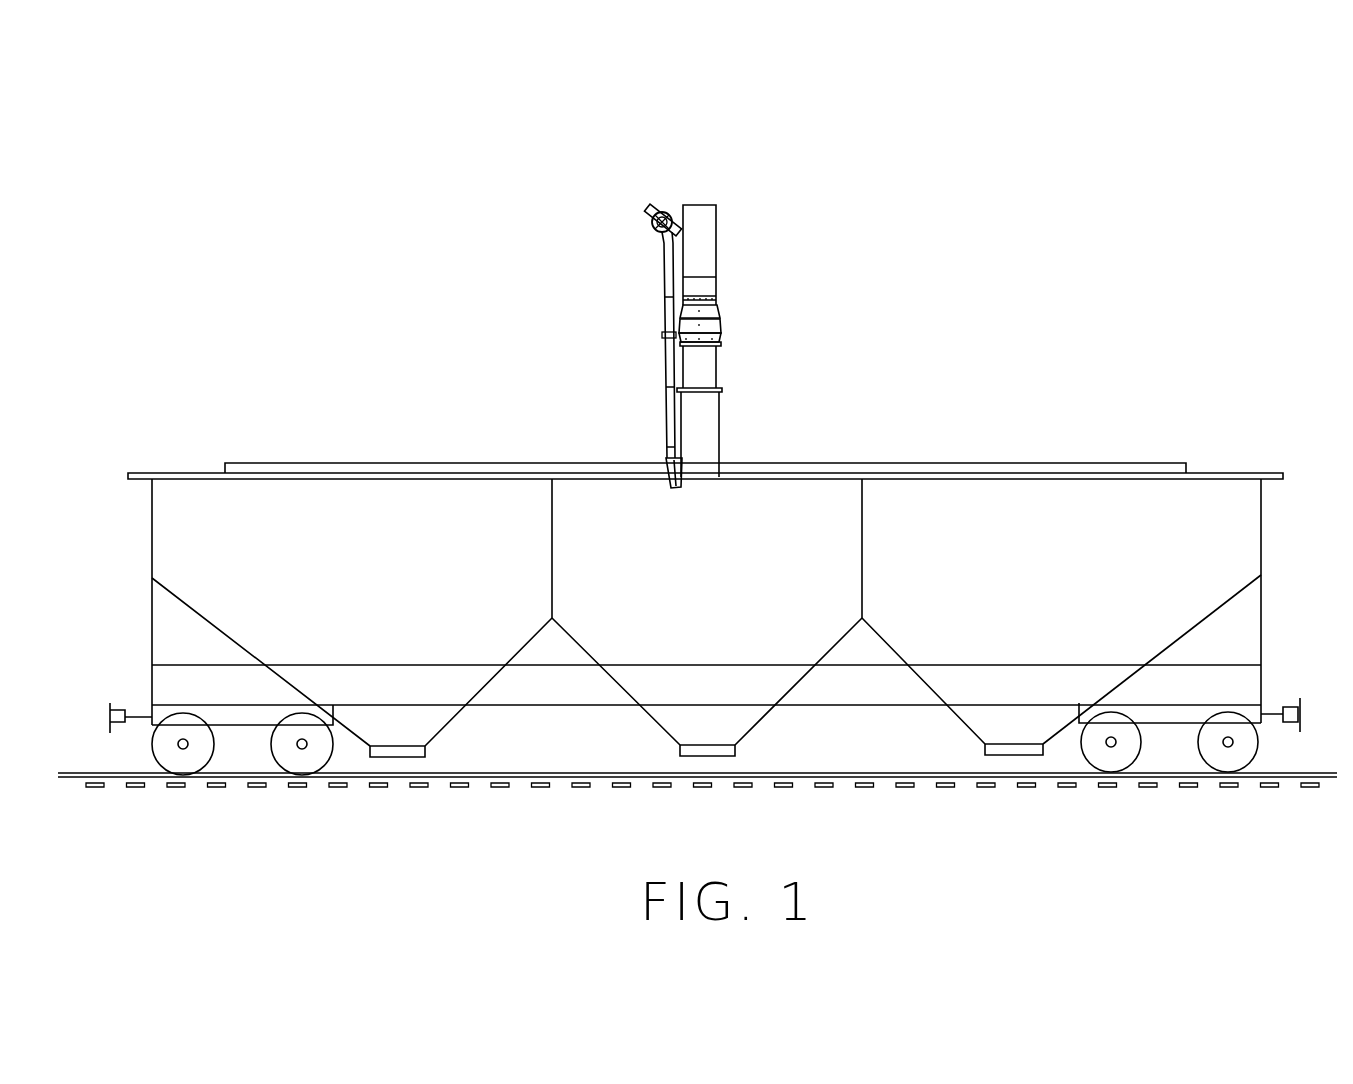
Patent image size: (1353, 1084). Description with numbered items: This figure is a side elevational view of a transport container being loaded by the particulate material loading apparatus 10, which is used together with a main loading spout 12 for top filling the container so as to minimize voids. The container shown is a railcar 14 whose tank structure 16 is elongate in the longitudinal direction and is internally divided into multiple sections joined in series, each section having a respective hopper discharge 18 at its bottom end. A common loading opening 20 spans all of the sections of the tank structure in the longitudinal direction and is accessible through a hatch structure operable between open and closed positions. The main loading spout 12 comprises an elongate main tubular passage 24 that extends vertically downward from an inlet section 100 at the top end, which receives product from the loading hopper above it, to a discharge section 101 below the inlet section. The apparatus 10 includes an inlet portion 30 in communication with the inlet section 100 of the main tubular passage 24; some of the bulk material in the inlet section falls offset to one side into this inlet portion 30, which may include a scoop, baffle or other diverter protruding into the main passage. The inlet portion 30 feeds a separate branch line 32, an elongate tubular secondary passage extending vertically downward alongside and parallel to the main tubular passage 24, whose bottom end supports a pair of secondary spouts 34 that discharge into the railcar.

The particulate material loading apparatus 10 is at (639, 158).
The main loading spout 12 is at (713, 188).
The railcar 14 is at (1021, 436).
The tank structure 16 is at (1060, 575).
The hopper discharge 18 is at (757, 726).
The loading opening 20 is at (852, 458).
The main tubular passage 24 is at (704, 259).
The inlet portion 30 is at (682, 220).
The branch line 32 is at (668, 313).
The secondary spouts 34 is at (665, 460).
The inlet section 100 is at (718, 222).
The discharge section 101 is at (717, 371).